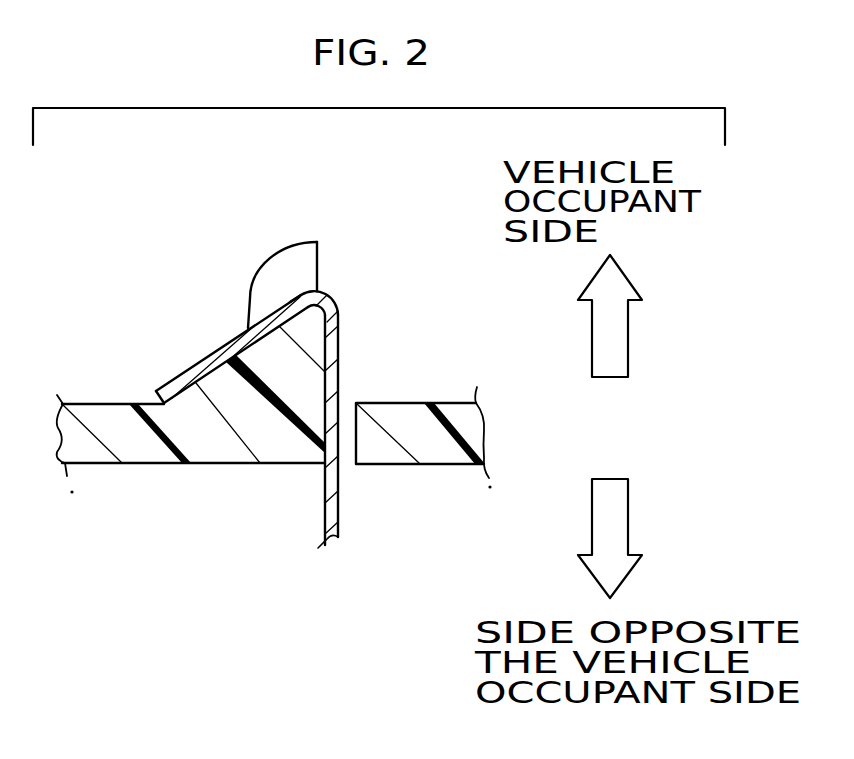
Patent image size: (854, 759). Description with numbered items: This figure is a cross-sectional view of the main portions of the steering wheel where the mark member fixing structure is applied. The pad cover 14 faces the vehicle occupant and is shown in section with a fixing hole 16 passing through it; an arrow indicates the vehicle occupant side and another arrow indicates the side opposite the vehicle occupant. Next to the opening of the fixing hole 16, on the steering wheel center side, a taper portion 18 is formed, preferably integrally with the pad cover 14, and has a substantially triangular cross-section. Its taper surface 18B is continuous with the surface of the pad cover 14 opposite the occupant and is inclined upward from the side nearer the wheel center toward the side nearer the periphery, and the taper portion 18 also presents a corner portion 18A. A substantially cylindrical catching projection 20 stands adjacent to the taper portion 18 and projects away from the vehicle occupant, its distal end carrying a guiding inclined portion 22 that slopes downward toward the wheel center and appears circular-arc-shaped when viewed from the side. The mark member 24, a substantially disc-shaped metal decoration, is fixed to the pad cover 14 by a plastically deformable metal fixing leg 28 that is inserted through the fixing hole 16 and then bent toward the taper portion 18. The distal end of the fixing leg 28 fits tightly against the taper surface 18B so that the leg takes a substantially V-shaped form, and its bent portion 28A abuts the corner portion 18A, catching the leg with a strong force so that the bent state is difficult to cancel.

The pad cover 14 is at (96, 392).
The fixing hole 16 is at (353, 407).
The taper portion 18 is at (211, 392).
The corner portion 18A is at (339, 302).
The taper surface 18B is at (217, 359).
The catching projection 20 is at (303, 262).
The guiding inclined portion 22 is at (269, 258).
The mark member 24 is at (342, 513).
The fixing leg 28 is at (226, 345).
The bent portion 28A is at (334, 296).